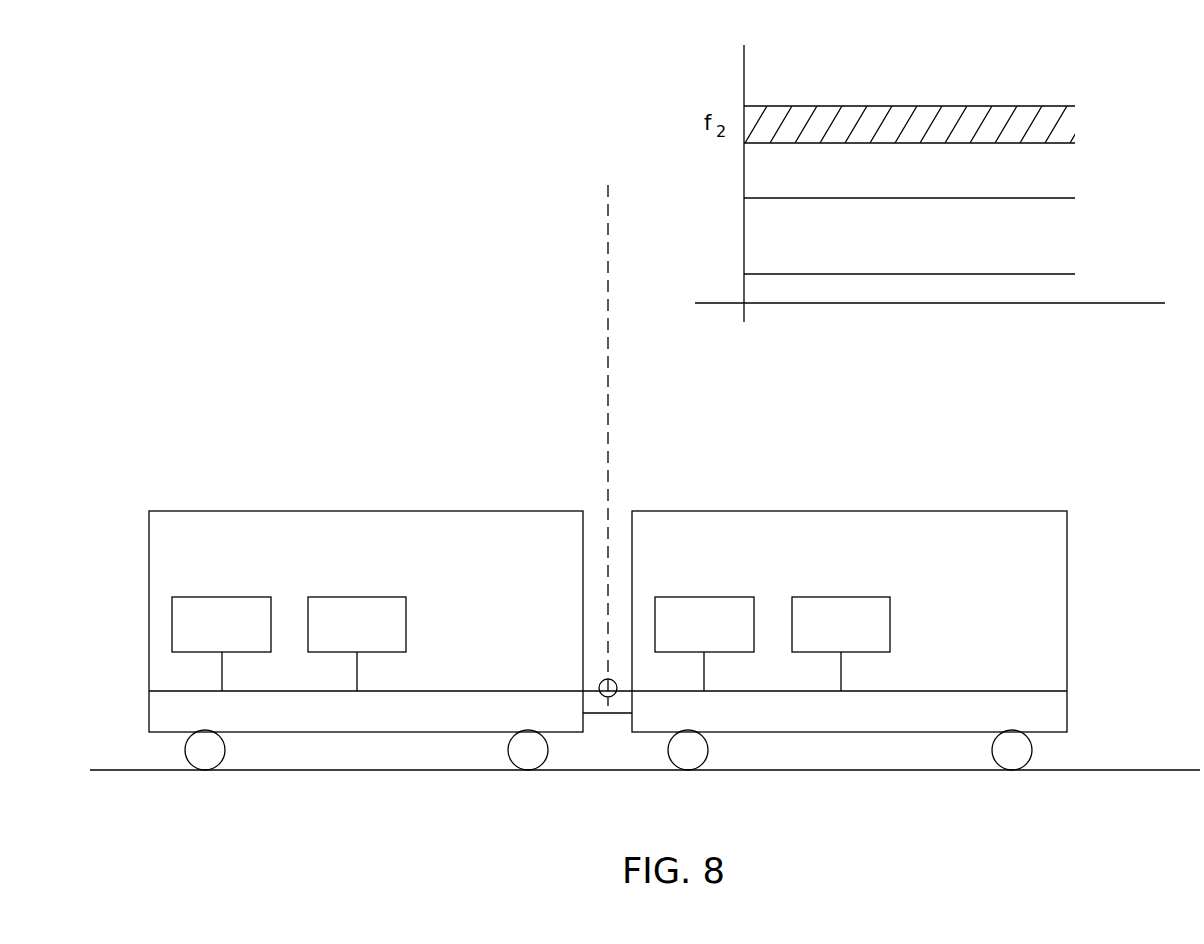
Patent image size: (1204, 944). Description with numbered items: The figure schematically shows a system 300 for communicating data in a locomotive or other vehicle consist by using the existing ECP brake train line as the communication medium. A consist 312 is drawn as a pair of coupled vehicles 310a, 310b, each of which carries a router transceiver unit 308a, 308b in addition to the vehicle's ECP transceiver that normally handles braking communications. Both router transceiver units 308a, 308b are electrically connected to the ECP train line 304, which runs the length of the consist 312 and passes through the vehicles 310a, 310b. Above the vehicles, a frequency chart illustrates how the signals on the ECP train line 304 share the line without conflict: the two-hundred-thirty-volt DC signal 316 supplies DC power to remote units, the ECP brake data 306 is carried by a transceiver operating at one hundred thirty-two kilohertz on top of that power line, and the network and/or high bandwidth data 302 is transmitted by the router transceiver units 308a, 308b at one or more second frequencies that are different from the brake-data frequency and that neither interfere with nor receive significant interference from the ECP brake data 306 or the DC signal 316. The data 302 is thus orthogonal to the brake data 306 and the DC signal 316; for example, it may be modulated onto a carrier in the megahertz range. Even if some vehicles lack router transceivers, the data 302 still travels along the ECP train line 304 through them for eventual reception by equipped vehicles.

The system for communicating data 300 is at (250, 230).
The network and/or high bandwidth data 302 is at (930, 108).
The ECP train line 304 is at (1028, 691).
The ECP brake data 306 is at (1046, 198).
The router transceiver unit 308a is at (222, 597).
The router transceiver unit 308b is at (704, 597).
The vehicle 310a is at (365, 511).
The vehicle 310b is at (850, 511).
The consist 312 is at (1037, 450).
The 230V DC signal 316 is at (1047, 274).